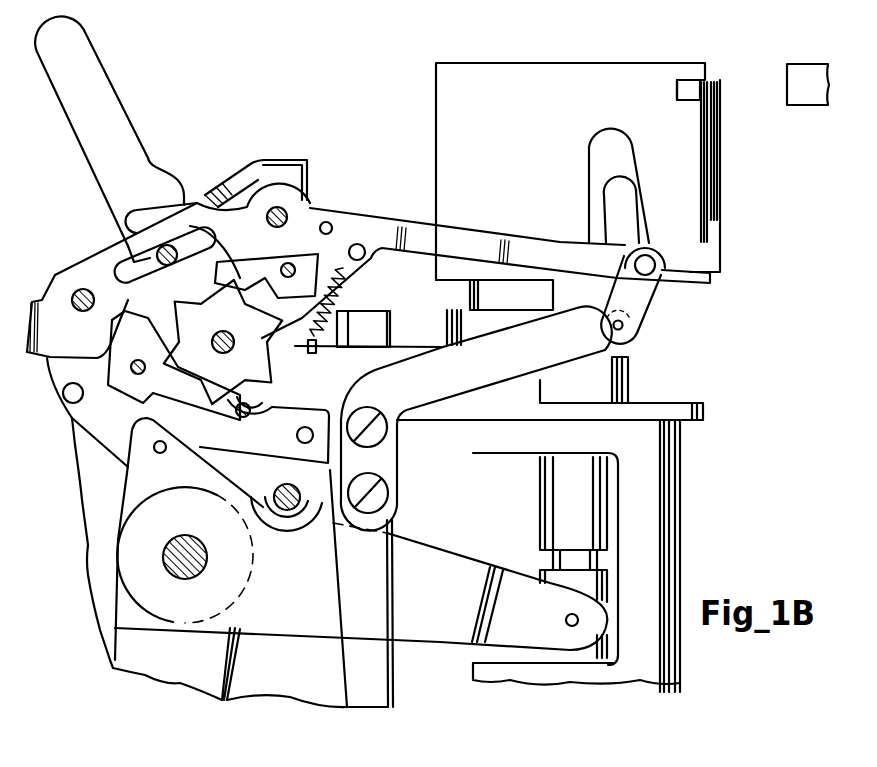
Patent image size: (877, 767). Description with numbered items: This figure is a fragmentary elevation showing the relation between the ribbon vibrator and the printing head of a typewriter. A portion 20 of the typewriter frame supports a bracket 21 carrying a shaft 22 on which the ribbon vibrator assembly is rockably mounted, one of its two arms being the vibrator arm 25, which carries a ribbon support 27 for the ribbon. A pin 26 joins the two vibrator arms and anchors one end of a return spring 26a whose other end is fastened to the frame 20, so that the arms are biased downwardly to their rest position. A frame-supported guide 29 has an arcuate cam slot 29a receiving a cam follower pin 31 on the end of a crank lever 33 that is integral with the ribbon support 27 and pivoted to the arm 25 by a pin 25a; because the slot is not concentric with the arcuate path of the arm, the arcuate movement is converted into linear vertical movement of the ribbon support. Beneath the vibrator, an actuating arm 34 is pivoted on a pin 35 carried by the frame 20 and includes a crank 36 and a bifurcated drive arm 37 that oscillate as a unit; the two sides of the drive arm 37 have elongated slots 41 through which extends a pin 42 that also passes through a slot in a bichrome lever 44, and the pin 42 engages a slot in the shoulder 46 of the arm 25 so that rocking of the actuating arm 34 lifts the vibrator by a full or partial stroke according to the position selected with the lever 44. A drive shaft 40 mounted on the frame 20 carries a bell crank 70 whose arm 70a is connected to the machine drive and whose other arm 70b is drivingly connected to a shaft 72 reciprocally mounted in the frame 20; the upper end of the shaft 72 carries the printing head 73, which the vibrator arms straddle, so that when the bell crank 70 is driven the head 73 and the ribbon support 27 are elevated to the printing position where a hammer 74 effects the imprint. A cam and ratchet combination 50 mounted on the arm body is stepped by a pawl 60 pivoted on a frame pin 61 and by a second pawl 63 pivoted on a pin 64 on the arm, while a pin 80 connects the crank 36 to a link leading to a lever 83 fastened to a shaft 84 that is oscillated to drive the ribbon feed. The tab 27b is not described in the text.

The typewriter frame portion 20 is at (372, 320).
The bracket 21 is at (297, 172).
The shaft 22 is at (287, 213).
The vibrator arm 25 is at (425, 212).
The pin 25a is at (650, 260).
The pin 26 is at (359, 244).
The return spring 26a is at (334, 316).
The ribbon support 27 is at (720, 208).
The tab 27b is at (686, 80).
The guide 29 is at (440, 355).
The cam slot 29a is at (633, 217).
The cam follower pin 31 is at (640, 325).
The crank lever 33 is at (652, 295).
The actuating arm 34 is at (45, 372).
The pin 35 is at (80, 292).
The crank 36 is at (127, 457).
The bifurcated drive arm 37 is at (93, 265).
The drive shaft 40 is at (175, 565).
The elongated slots 41 is at (125, 240).
The pin 42 is at (166, 267).
The bichrome lever 44 is at (110, 95).
The shoulder 46 is at (192, 205).
The cam and ratchet combination 50 is at (285, 366).
The pawl 60 is at (178, 398).
The pin 61 is at (136, 374).
The pawl 63 is at (250, 268).
The pin 64 is at (290, 266).
The bell crank 70 is at (102, 621).
The bell crank arm 70a is at (225, 677).
The bell crank arm 70b is at (466, 560).
The shaft 72 is at (540, 500).
The printing head 73 is at (565, 75).
The hammer 74 is at (800, 66).
The pin 80 is at (68, 400).
The lever 83 is at (264, 466).
The shaft 84 is at (294, 512).